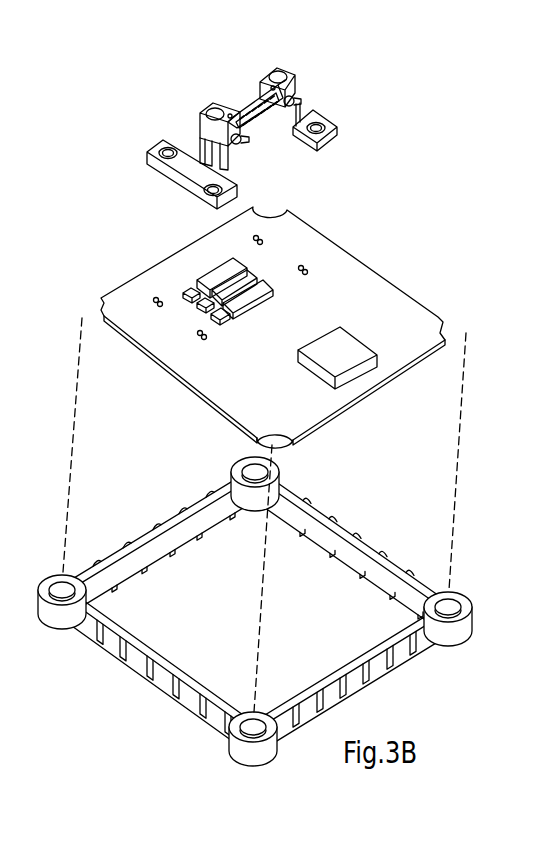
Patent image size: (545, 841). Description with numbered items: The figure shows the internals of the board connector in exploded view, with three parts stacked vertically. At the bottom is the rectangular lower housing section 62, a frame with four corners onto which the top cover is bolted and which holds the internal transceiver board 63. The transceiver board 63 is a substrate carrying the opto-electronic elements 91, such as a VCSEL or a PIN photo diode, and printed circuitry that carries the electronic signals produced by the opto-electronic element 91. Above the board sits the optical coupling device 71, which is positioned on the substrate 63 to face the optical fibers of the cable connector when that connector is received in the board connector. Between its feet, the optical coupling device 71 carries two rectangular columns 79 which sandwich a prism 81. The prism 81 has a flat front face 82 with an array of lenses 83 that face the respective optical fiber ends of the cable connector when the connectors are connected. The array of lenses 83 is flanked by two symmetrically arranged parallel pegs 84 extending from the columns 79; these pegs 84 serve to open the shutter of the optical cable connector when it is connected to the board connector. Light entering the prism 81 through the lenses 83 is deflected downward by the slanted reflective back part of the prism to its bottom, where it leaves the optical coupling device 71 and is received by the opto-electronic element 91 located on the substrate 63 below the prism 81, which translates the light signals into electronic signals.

The lower housing section 62 is at (393, 577).
The transceiver board 63 is at (275, 327).
The optical coupling device 71 is at (236, 125).
The rectangular columns 79 is at (198, 130).
The prism 81 is at (243, 115).
The flat front face 82 is at (247, 107).
The array of lenses 83 is at (275, 118).
The pegs 84 is at (297, 102).
The opto-electronic element 91 is at (208, 278).